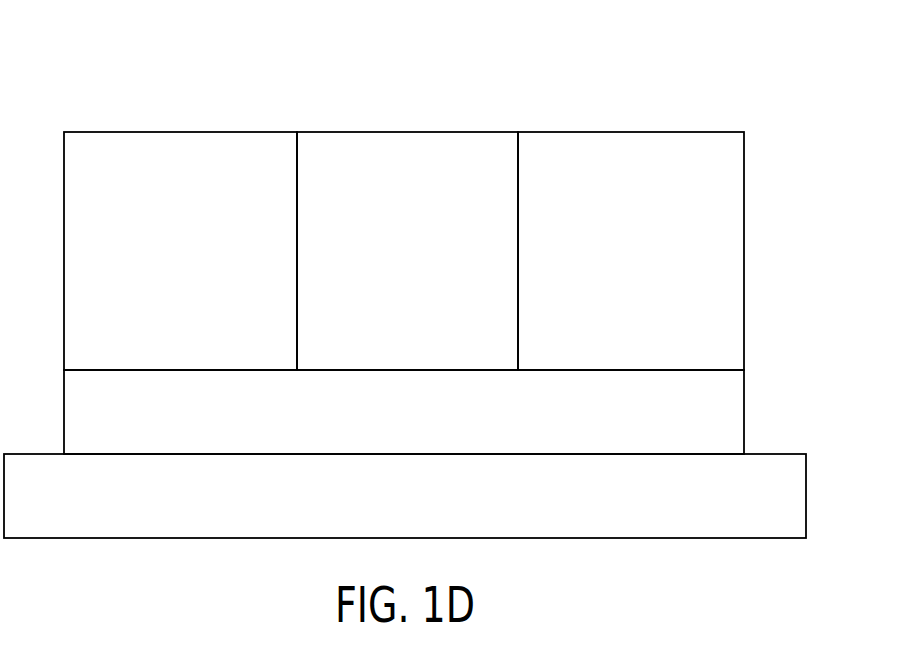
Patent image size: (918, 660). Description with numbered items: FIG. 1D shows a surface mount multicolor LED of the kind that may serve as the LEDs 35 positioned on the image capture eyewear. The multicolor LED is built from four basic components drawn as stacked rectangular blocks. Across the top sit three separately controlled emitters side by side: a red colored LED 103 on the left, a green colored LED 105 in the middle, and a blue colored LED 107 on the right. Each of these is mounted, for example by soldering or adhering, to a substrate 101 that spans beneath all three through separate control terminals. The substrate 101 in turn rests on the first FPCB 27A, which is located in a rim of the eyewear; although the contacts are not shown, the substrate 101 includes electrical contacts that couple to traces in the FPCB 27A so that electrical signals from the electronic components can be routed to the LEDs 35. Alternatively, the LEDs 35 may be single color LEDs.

The LEDs 35 is at (139, 106).
The red colored LED 103 is at (243, 148).
The green colored LED 105 is at (407, 157).
The blue colored LED 107 is at (622, 157).
The substrate 101 is at (733, 412).
The first FPCB 27A is at (793, 495).